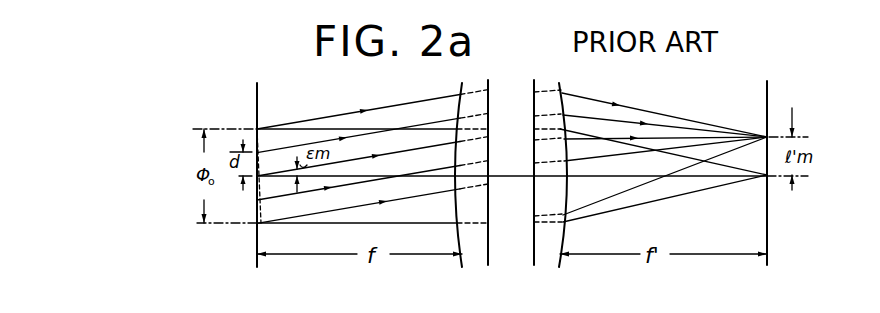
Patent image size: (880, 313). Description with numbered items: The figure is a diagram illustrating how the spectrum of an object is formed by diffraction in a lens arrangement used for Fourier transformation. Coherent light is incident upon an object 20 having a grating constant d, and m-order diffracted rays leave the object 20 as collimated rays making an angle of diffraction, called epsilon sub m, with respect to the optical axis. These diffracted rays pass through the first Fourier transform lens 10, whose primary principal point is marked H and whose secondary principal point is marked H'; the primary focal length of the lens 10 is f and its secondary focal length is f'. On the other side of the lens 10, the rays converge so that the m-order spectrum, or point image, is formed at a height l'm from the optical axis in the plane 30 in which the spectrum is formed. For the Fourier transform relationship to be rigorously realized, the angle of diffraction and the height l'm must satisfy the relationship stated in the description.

The first Fourier transform lens 10 is at (568, 271).
The object 20 is at (256, 246).
The plane in which the spectrum is formed 30 is at (767, 262).